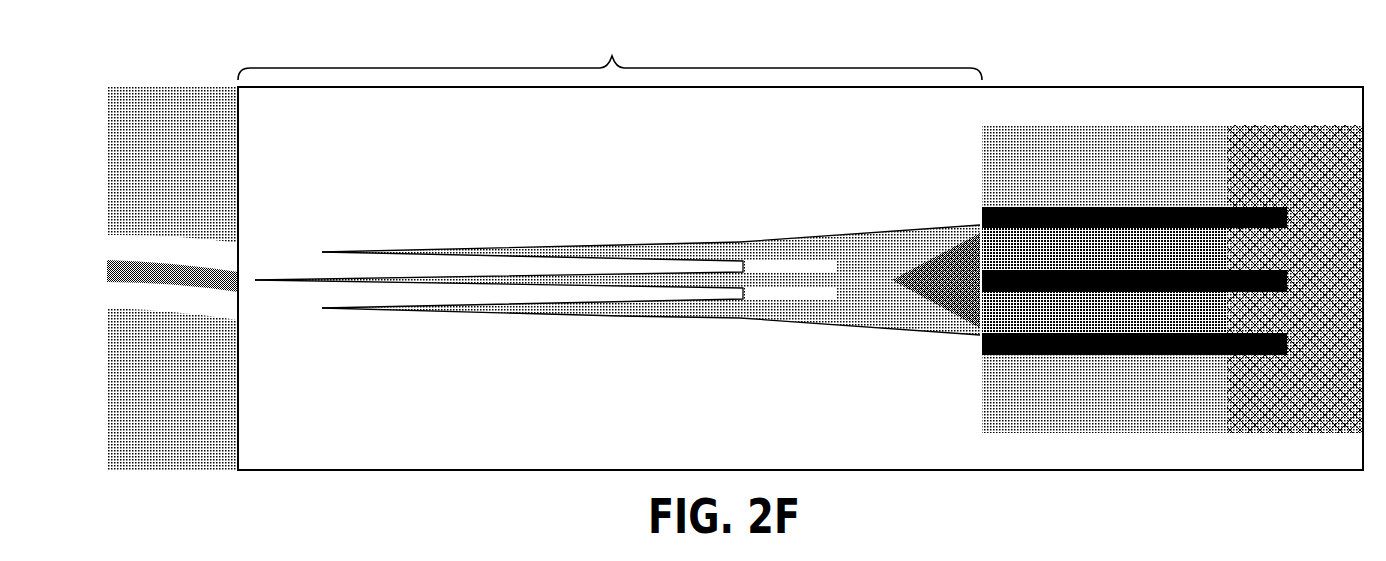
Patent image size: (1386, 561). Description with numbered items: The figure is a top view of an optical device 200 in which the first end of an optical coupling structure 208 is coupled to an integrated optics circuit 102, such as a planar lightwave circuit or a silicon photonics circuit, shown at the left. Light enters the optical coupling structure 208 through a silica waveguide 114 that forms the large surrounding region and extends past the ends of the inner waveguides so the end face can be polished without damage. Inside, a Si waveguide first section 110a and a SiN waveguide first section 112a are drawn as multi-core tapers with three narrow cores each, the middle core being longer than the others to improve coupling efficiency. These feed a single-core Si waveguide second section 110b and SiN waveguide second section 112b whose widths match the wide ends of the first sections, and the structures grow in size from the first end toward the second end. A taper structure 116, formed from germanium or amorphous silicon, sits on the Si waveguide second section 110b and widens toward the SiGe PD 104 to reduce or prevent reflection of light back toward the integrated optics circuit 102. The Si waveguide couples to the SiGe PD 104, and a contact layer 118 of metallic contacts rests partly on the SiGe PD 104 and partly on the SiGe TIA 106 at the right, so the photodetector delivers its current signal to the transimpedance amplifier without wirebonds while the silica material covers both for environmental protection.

The optical device 200 is at (228, 38).
The optical coupling structure 208 is at (610, 54).
The integrated optics circuit 102 is at (190, 120).
The silica waveguide 114 is at (341, 166).
The Si waveguide first section 110a is at (704, 281).
The Si waveguide second section 110b is at (860, 278).
The SiN waveguide first section 112a is at (657, 292).
The SiN waveguide second section 112b is at (767, 265).
The taper structure 116 is at (933, 275).
The contact layer 118 is at (1038, 207).
The SiGe PD 104 is at (1125, 258).
The SiGe TIA 106 is at (1315, 182).